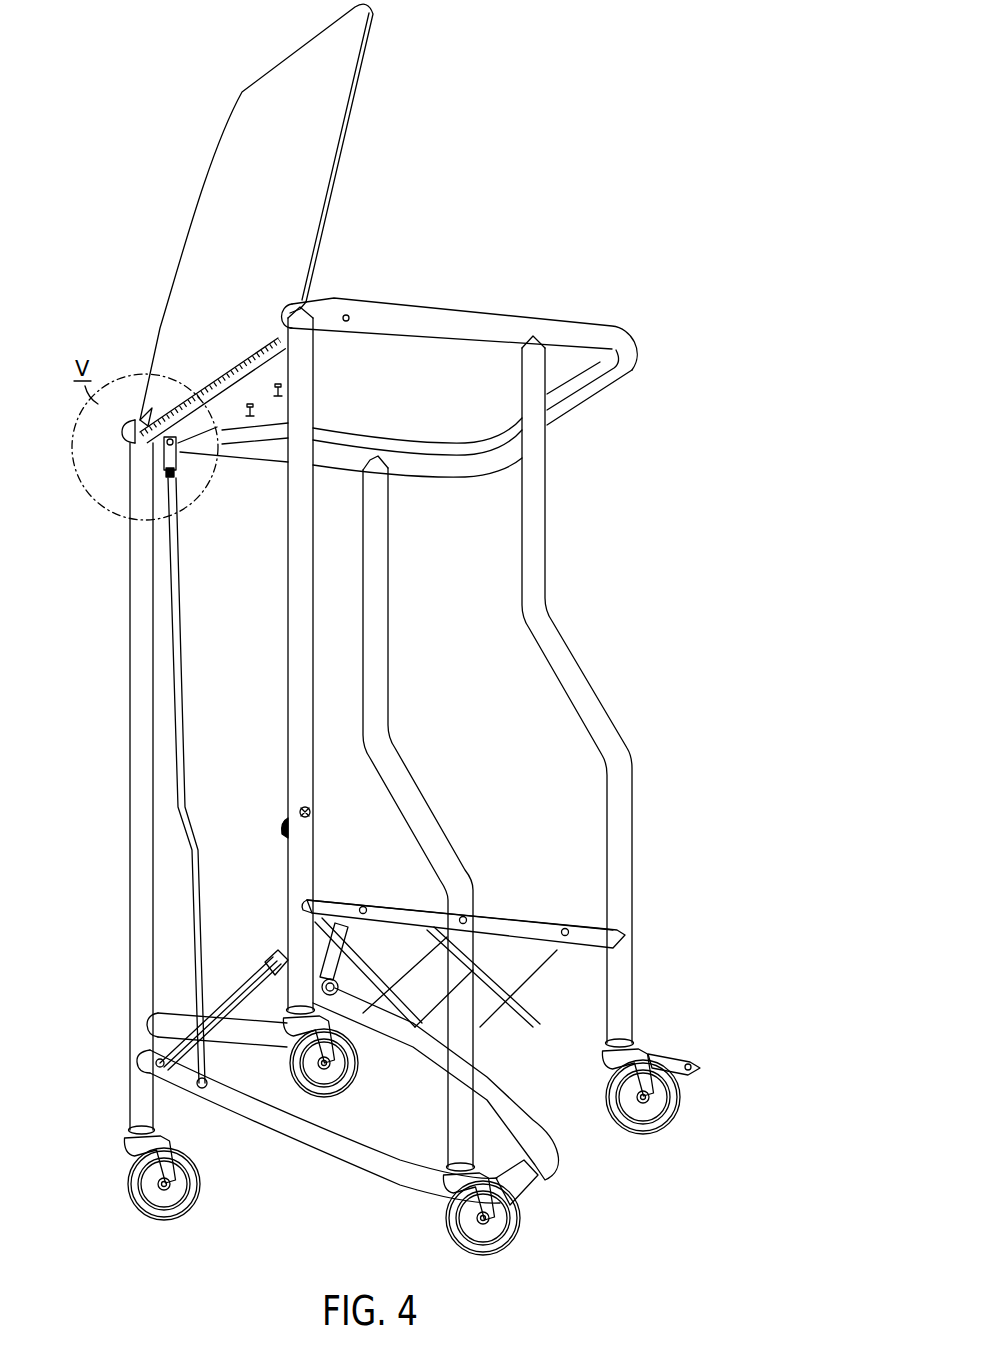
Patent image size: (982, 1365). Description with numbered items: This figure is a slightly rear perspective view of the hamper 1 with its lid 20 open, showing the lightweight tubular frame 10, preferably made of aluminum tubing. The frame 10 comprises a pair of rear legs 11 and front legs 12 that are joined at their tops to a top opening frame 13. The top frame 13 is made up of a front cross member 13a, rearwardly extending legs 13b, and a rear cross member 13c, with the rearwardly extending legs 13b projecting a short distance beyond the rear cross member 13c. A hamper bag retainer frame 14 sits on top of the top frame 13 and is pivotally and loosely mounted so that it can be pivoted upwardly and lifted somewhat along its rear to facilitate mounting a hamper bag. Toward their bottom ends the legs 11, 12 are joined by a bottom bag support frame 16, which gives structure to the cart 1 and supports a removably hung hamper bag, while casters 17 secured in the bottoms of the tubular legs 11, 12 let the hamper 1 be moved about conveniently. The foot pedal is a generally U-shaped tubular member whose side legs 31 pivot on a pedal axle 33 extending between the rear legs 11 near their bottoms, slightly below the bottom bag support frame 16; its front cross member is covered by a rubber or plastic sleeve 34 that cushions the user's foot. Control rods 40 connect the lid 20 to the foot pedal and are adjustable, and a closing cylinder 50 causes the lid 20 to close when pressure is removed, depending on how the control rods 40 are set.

The hamper 1 is at (727, 284).
The frame 10 is at (620, 741).
The rear legs 11 is at (292, 588).
The front legs 12 is at (534, 607).
The top opening frame 13 is at (394, 401).
The front cross member 13a is at (567, 423).
The rearwardly extending legs 13b is at (461, 326).
The rear cross member 13c is at (233, 398).
The hamper bag retainer frame 14 is at (594, 328).
The bottom bag support frame 16 is at (518, 930).
The casters 17 is at (157, 1198).
The lid 20 is at (211, 206).
The side legs 31 is at (496, 1095).
The pedal axle 33 is at (235, 985).
The sleeve 34 is at (530, 1198).
The control rods 40 is at (175, 584).
The closing cylinder 50 is at (332, 932).